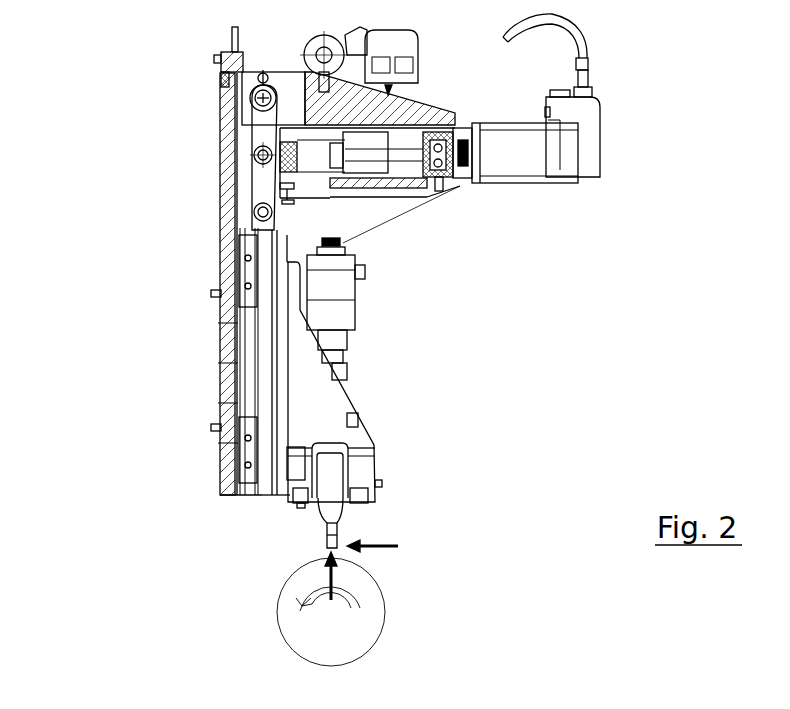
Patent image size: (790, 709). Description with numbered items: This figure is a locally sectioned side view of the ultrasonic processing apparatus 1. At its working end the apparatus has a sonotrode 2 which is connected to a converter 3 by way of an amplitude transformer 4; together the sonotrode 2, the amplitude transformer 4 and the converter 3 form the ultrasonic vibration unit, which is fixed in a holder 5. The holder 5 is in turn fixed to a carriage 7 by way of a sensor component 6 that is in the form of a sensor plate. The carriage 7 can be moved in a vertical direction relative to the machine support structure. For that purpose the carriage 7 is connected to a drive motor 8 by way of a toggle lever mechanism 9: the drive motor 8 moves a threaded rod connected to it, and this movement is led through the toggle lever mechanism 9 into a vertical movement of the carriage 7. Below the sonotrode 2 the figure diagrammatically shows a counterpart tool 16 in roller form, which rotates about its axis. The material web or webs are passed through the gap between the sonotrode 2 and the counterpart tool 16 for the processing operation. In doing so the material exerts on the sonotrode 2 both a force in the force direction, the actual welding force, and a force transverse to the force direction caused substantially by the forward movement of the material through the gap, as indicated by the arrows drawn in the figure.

The machining device 1 is at (244, 261).
The sonotrode 2 is at (328, 498).
The converter 3 is at (315, 305).
The amplitude transformer 4 is at (347, 388).
The holder 5 is at (317, 427).
The sensor component 6 is at (281, 482).
The carriage 7 is at (265, 480).
The drive motor 8 is at (513, 145).
The toggle lever mechanism 9 is at (262, 118).
The counterpart tool 16 is at (387, 612).